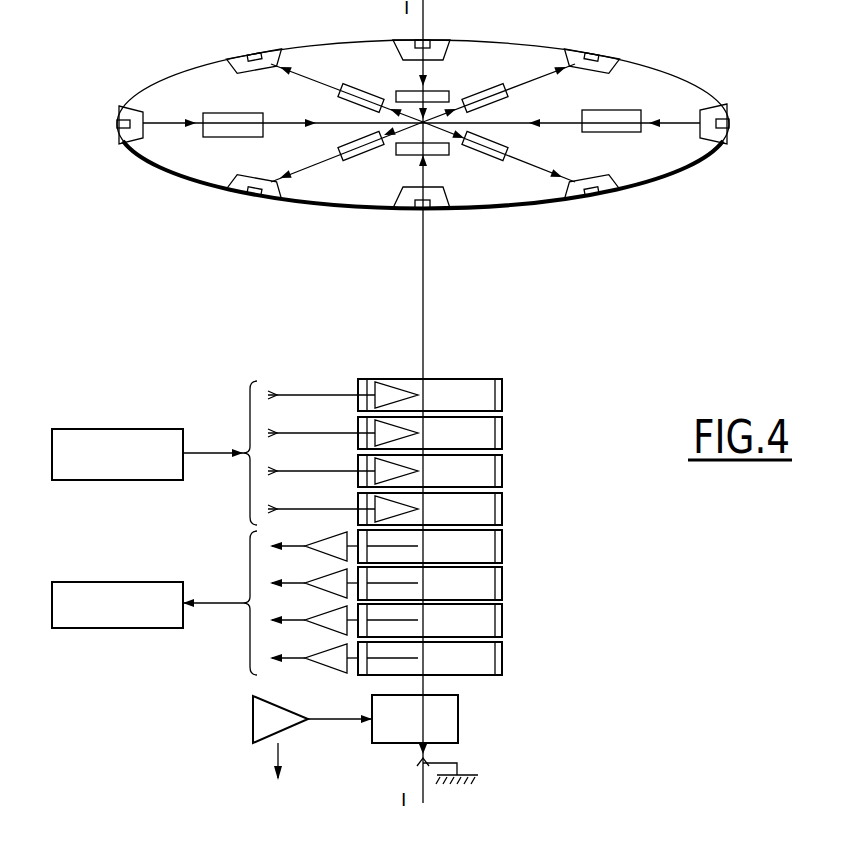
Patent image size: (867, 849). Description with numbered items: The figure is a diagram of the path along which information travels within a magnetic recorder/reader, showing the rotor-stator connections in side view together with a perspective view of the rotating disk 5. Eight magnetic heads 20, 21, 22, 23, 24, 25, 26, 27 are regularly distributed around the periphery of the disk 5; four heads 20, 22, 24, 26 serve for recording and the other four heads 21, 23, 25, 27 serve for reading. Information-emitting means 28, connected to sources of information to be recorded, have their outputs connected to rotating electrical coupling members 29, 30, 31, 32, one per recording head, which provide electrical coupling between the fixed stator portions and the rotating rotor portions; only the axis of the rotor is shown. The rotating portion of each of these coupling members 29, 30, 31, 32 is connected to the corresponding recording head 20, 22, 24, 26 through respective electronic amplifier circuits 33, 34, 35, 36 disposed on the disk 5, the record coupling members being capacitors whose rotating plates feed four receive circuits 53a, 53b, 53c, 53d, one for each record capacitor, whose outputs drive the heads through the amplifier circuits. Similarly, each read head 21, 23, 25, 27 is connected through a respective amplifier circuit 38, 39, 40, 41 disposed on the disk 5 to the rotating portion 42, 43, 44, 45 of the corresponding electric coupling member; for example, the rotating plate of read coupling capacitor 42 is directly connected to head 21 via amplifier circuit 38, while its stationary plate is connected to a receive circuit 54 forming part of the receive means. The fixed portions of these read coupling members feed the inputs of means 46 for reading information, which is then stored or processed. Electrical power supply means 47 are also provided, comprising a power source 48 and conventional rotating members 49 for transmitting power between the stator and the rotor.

The rotating disk 5 is at (148, 182).
The magnetic head 20 is at (258, 49).
The magnetic head 21 is at (418, 39).
The magnetic head 22 is at (592, 53).
The magnetic head 23 is at (730, 123).
The magnetic head 24 is at (590, 198).
The magnetic head 25 is at (426, 210).
The magnetic head 26 is at (246, 202).
The magnetic head 27 is at (117, 122).
The information-emitting means 28 is at (90, 428).
The rotating electrical coupling member 29 is at (507, 403).
The rotating electrical coupling member 30 is at (507, 438).
The rotating electrical coupling member 31 is at (507, 470).
The rotating electrical coupling member 32 is at (507, 508).
The electronic amplifier circuit 33 is at (361, 88).
The electronic amplifier circuit 34 is at (479, 92).
The electronic amplifier circuit 35 is at (498, 158).
The electronic amplifier circuit 36 is at (346, 150).
The amplifier circuit 38 is at (411, 90).
The amplifier circuit 39 is at (613, 108).
The amplifier circuit 40 is at (440, 155).
The amplifier circuit 41 is at (251, 113).
The rotating portion of electric coupling member 42 is at (507, 547).
The rotating portion of electric coupling member 43 is at (513, 584).
The rotating portion of electric coupling member 44 is at (515, 621).
The rotating portion of electric coupling member 45 is at (505, 659).
The means for reading information 46 is at (120, 628).
The electrical power supply means 47 is at (245, 732).
The power source 48 is at (298, 728).
The rotating members 49 is at (459, 719).
The receive circuit 53a is at (389, 380).
The receive circuit 53b is at (380, 433).
The receive circuit 53c is at (380, 471).
The receive circuit 53d is at (380, 509).
The receive circuit 54 is at (328, 540).